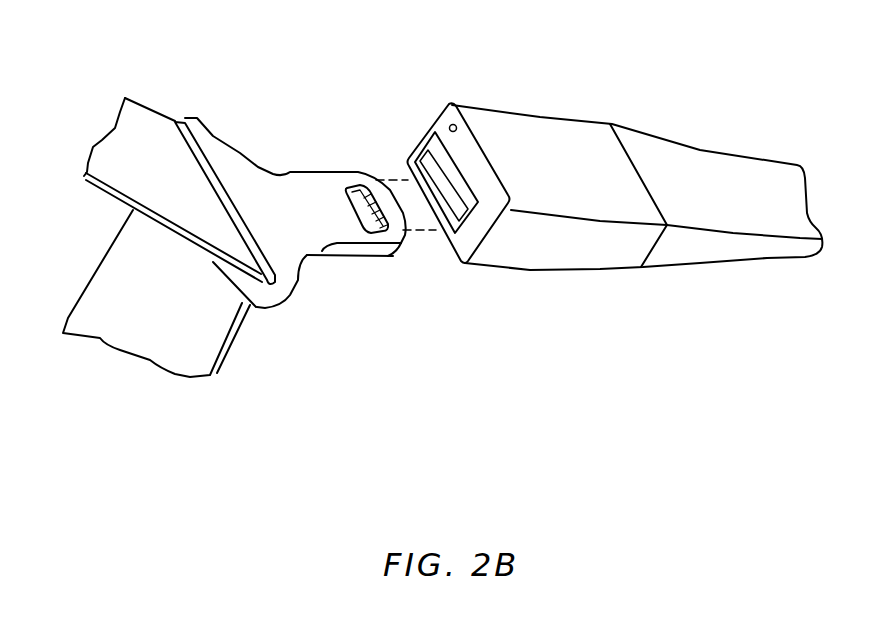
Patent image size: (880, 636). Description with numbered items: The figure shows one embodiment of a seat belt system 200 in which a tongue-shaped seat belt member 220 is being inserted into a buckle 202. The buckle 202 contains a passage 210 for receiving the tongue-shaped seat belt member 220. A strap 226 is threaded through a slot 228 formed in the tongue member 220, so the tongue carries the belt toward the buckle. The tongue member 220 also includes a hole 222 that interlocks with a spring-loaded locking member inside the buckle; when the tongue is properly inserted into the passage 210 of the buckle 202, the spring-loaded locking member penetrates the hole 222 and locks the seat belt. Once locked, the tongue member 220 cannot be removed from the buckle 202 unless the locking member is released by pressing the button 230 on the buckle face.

The seat belt system 200 is at (521, 407).
The buckle 202 is at (522, 125).
The passage 210 is at (407, 170).
The tongue-shaped seat belt member 220 is at (328, 229).
The hole 222 is at (390, 258).
The strap 226 is at (170, 178).
The slot 228 is at (180, 120).
The button 230 is at (411, 152).